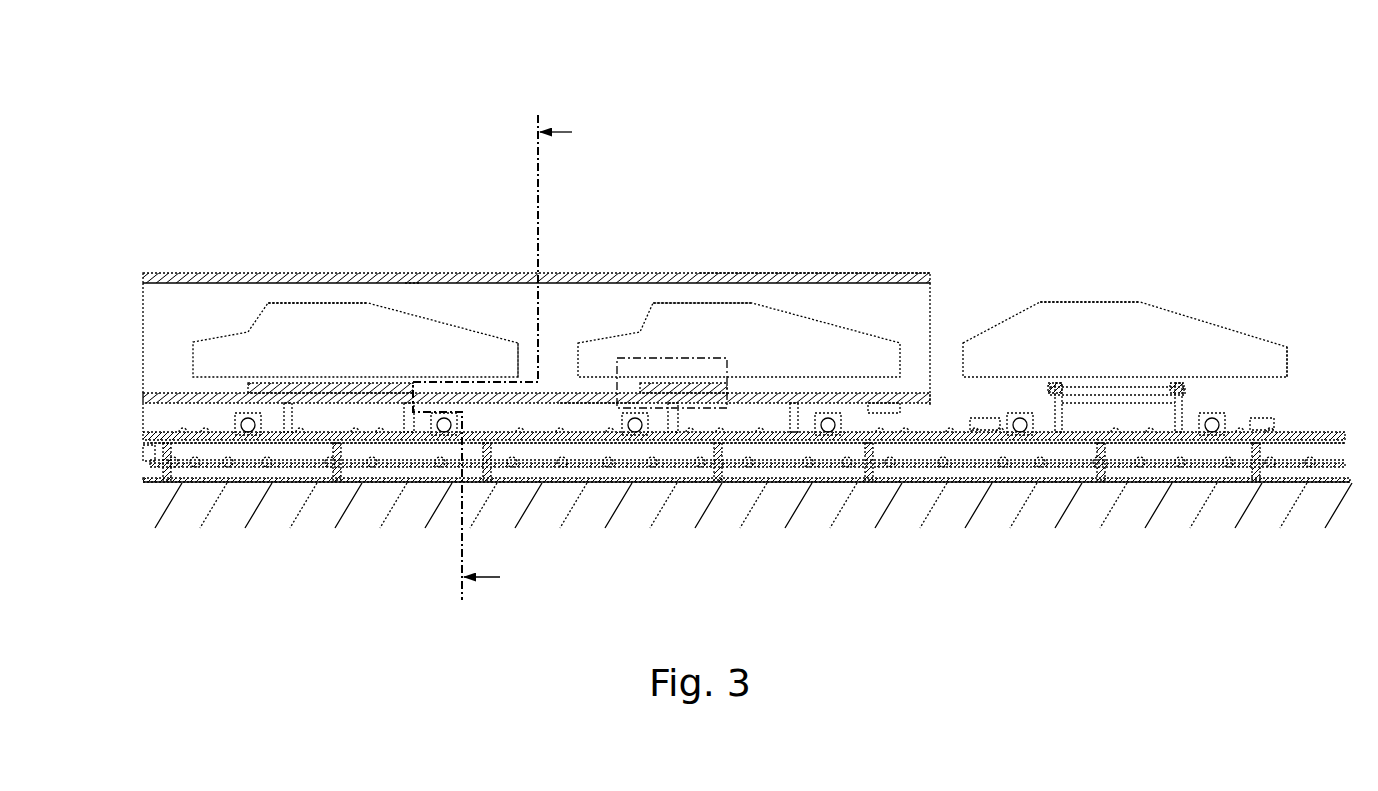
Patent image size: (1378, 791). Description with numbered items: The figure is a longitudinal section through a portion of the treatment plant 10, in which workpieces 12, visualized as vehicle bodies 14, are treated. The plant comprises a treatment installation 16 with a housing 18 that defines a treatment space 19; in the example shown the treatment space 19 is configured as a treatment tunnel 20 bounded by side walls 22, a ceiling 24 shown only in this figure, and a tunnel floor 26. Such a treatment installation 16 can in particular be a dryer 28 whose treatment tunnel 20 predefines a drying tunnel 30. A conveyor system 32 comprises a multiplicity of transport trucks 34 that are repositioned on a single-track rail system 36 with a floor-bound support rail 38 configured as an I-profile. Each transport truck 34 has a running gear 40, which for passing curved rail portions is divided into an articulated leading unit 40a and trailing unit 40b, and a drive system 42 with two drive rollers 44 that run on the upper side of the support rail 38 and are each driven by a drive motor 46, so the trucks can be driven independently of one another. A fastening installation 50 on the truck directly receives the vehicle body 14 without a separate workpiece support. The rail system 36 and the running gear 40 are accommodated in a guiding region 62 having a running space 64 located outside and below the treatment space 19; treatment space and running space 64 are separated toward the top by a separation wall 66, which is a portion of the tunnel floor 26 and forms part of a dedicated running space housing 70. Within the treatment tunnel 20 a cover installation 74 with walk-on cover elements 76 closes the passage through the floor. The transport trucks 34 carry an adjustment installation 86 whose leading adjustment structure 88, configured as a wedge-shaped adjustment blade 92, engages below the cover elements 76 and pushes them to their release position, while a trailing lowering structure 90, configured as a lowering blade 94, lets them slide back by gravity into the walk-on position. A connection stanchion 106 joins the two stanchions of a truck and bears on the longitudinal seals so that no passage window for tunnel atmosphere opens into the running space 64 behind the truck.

The treatment plant 10 is at (324, 72).
The workpiece 12 is at (298, 318).
The vehicle body 14 is at (333, 310).
The treatment installation 16 is at (182, 272).
The housing 18 is at (247, 272).
The treatment space 19 is at (502, 318).
The treatment tunnel 20 is at (562, 306).
The side wall 22 is at (150, 305).
The ceiling 24 is at (412, 275).
The tunnel floor 26 is at (143, 393).
The dryer 28 is at (880, 268).
The drying tunnel 30 is at (838, 300).
The conveyor system 32 is at (205, 491).
The transport truck 34 is at (352, 448).
The rail system 36 is at (142, 472).
The support rail 38 is at (152, 452).
The running gear 40 is at (388, 448).
The leading unit 40a is at (453, 447).
The trailing unit 40b is at (222, 450).
The drive system 42 is at (222, 415).
The drive roller 44 is at (448, 416).
The drive motor 46 is at (243, 413).
The fastening installation 50 is at (292, 378).
The guiding region 62 is at (670, 481).
The running space 64 is at (546, 416).
The separation wall 66 is at (595, 403).
The running space housing 70 is at (890, 413).
The cover installation 74 is at (830, 378).
The cover element 76 is at (812, 387).
The adjustment installation 86 is at (1222, 348).
The adjustment structure 88 is at (1070, 398).
The lowering structure 90 is at (1058, 395).
The adjustment blade 92 is at (1190, 385).
The lowering blade 94 is at (1050, 385).
The connection stanchion 106 is at (1093, 400).